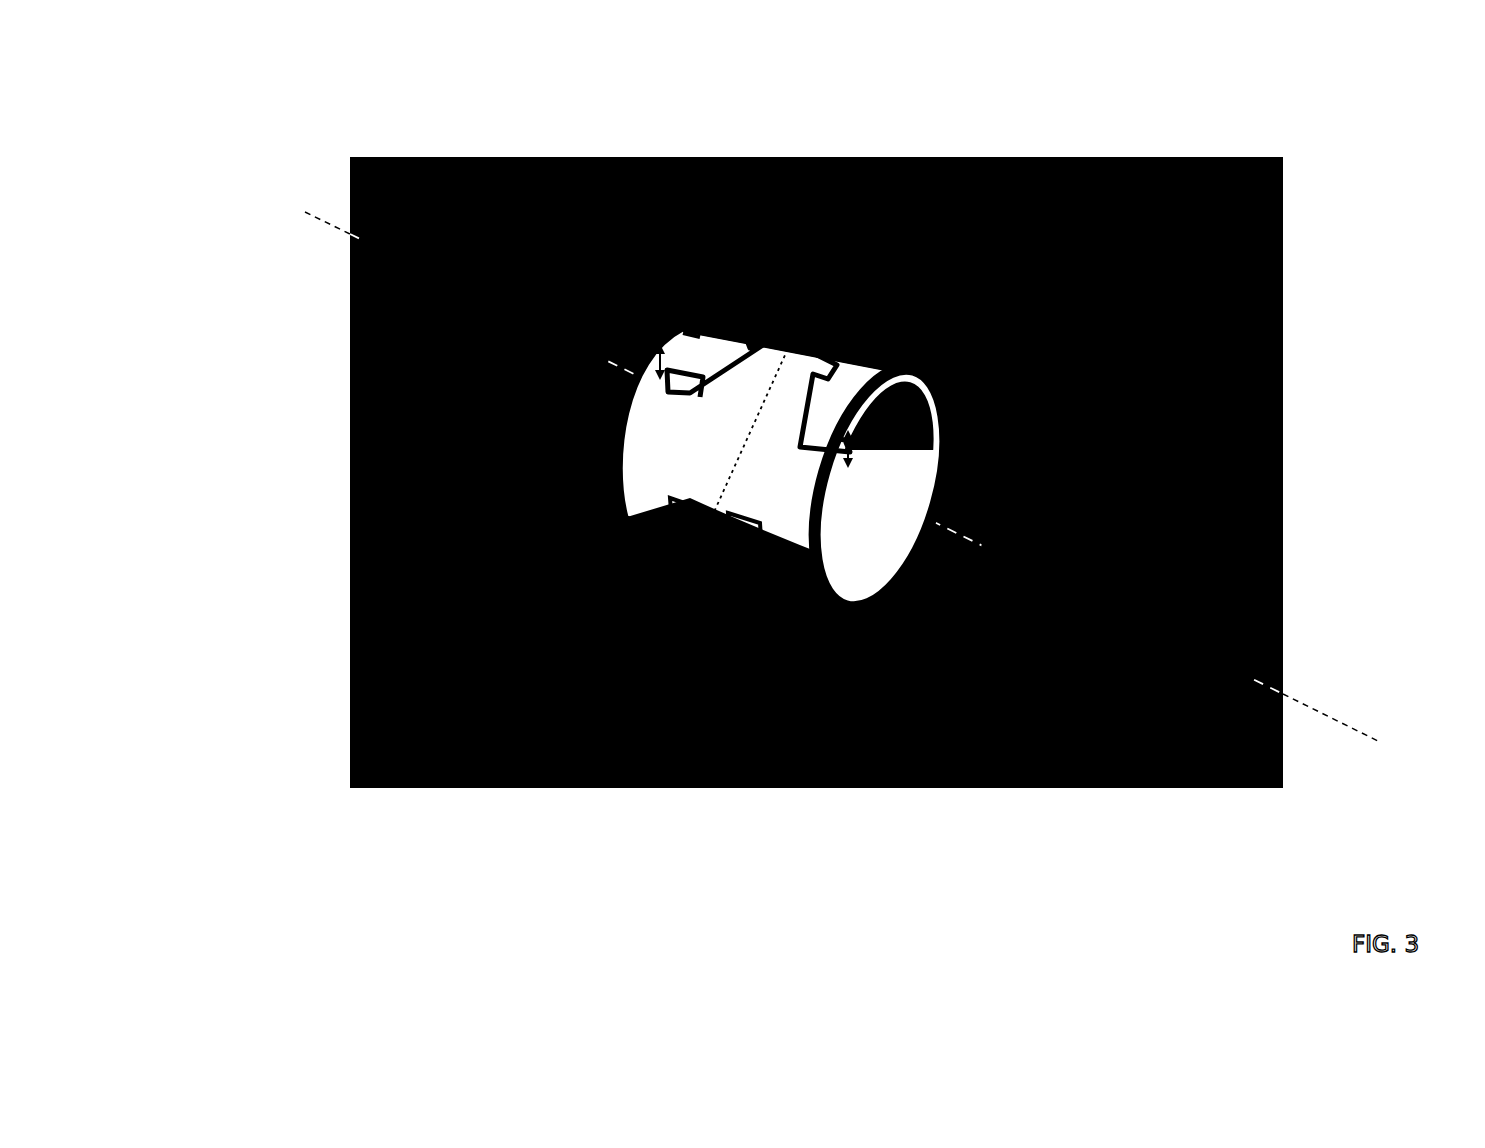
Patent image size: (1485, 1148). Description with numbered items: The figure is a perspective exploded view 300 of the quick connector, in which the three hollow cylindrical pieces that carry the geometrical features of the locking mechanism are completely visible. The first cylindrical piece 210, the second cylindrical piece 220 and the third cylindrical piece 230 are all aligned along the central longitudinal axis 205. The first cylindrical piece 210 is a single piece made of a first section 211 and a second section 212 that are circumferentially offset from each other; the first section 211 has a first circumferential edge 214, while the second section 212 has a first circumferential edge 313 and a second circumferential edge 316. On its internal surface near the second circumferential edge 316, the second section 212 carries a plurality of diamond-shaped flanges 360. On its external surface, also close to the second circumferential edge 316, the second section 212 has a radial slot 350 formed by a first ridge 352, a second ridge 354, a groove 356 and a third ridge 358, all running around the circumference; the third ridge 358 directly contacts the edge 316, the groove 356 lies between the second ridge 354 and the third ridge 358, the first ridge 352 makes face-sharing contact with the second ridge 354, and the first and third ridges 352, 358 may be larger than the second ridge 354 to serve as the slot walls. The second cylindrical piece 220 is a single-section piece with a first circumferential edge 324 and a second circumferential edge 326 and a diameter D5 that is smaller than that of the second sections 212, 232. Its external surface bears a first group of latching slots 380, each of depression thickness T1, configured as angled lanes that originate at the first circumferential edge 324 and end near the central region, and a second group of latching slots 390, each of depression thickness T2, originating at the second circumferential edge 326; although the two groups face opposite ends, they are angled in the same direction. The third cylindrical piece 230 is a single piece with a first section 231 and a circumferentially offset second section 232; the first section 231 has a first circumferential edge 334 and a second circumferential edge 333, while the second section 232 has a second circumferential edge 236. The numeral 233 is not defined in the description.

The exploded view 300 is at (185, 82).
The central longitudinal axis 205 is at (1347, 722).
The first cylindrical piece 210 is at (380, 526).
The first section 211 is at (352, 342).
The second section 212 is at (470, 312).
The first circumferential edge 214 is at (425, 205).
The first circumferential edge 313 is at (357, 400).
The second circumferential edge 316 is at (611, 247).
The radial slot 350 is at (588, 180).
The first ridge 352 is at (535, 184).
The second ridge 354 is at (550, 206).
The groove 356 is at (548, 226).
The third ridge 358 is at (555, 251).
The flanges 360 is at (523, 440).
The second cylindrical piece 220 is at (678, 655).
The first circumferential edge 324 is at (697, 322).
The second circumferential edge 326 is at (937, 436).
The first group of latching slots 380 is at (721, 345).
The second group of latching slots 390 is at (835, 412).
The depression thickness T1 is at (657, 356).
The depression thickness T2 is at (851, 450).
The diameter D5 is at (747, 438).
The third cylindrical piece 230 is at (1005, 828).
The first section 231 is at (1007, 546).
The second section 232 is at (1105, 570).
The second end cap edge 233 is at (1150, 417).
The second circumferential edge 333 is at (1170, 463).
The second circumferential edge 236 is at (1260, 537).
The first circumferential edge 334 is at (940, 645).